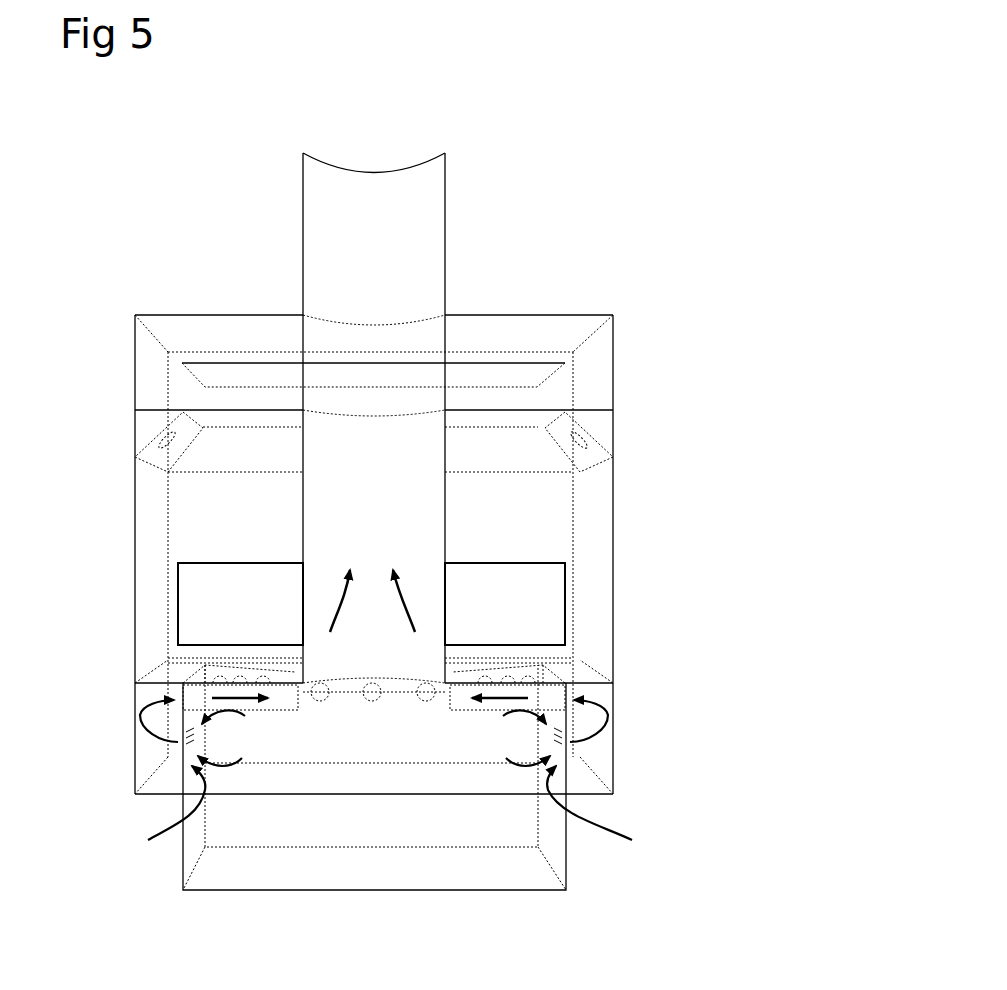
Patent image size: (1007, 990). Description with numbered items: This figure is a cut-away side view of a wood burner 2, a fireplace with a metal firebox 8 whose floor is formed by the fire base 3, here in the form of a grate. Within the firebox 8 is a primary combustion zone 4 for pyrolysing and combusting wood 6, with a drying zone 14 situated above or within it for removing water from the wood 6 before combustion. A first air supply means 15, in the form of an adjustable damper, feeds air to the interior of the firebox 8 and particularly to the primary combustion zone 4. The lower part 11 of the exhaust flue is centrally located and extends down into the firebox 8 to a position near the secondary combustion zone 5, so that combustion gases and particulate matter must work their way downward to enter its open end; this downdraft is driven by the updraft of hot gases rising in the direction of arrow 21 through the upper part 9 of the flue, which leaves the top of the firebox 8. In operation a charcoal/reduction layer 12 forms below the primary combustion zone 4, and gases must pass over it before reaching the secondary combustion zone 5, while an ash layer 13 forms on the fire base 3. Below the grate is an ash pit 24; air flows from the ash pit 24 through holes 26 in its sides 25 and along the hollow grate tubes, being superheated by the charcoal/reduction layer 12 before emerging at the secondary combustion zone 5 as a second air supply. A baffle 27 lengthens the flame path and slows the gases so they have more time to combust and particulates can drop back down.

The wood burner 2 is at (116, 284).
The fire base 3 is at (540, 677).
The primary combustion zone 4 is at (371, 604).
The secondary combustion zone 5 is at (374, 706).
The wood 6 is at (205, 590).
The firebox 8 is at (135, 465).
The upper part of the exhaust flue 9 is at (410, 208).
The lower part of the exhaust flue 11 is at (374, 606).
The charcoal/reduction layer 12 is at (275, 668).
The ash layer 13 is at (371, 758).
The drying zone 14 is at (372, 523).
The first air supply means 15 is at (148, 428).
The arrow 21 is at (371, 619).
The ash pit 24 is at (428, 780).
The sides of the ash pit 25 is at (391, 779).
The holes 26 is at (374, 738).
The baffle 27 is at (465, 376).